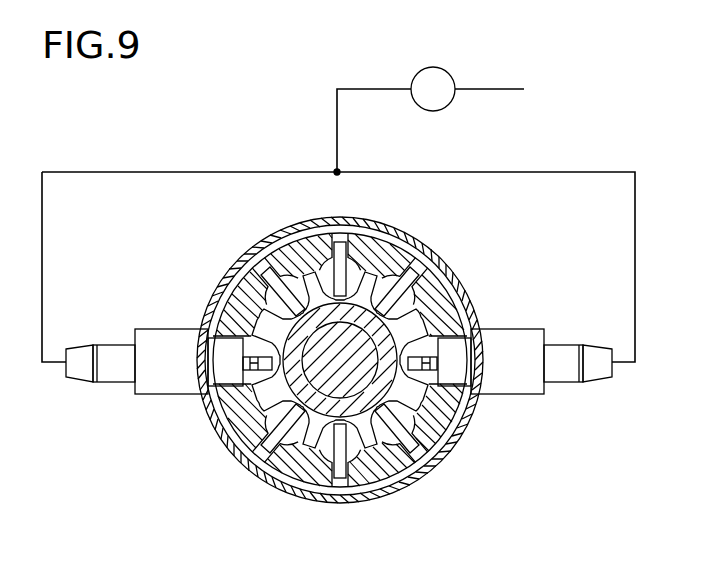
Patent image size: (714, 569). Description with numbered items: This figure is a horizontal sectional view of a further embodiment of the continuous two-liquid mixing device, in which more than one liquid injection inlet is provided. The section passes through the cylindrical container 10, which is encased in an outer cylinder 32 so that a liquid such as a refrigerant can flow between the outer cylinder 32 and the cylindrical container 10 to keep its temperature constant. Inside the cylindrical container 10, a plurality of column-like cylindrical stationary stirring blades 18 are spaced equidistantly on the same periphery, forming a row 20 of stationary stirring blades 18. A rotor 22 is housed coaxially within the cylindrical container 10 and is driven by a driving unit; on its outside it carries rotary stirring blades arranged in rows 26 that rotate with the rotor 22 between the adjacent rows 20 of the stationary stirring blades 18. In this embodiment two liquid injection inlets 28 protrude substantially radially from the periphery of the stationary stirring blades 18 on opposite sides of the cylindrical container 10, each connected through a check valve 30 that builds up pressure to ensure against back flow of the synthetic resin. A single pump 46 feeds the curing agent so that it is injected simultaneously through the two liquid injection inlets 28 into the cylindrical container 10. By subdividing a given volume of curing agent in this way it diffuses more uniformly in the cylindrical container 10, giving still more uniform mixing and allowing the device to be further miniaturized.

The cylindrical container 10 is at (402, 268).
The stationary stirring blade 18 is at (272, 290).
The row of stationary stirring blades 20 is at (390, 440).
The rotor 22 is at (360, 310).
The row of rotary stirring blades 26 is at (327, 440).
The liquid injection inlet 28 is at (250, 356).
The check valve 30 is at (180, 395).
The outer cylinder 32 is at (470, 276).
The pump 46 is at (452, 99).